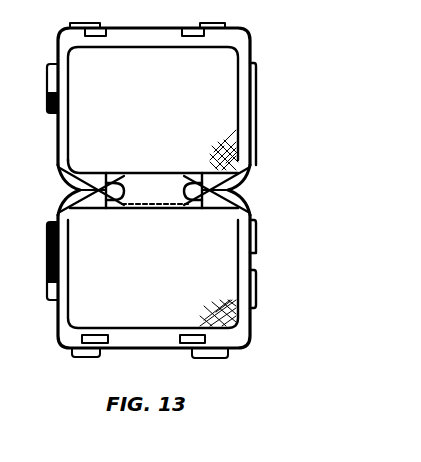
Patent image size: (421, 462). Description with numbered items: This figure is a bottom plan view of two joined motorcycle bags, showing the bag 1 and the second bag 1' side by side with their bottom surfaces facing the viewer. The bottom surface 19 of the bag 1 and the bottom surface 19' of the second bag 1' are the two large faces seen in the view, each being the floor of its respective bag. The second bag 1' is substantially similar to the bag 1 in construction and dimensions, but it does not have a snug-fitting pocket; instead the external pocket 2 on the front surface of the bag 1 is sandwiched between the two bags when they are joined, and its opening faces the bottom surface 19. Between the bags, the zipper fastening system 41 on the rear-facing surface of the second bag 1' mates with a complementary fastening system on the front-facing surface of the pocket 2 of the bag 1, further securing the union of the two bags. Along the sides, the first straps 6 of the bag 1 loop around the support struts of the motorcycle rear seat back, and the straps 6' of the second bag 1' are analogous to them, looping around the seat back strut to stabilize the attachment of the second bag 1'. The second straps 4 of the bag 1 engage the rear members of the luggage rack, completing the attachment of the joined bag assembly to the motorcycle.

The bag 1 is at (170, 82).
The second bag 1' is at (206, 298).
The external pocket 2 is at (152, 192).
The second straps 4 is at (191, 28).
The first straps 6 is at (180, 188).
The straps 6' is at (195, 203).
The bottom surface 19 is at (197, 108).
The bottom surface 19' is at (197, 274).
The zipper fastening system 41 is at (150, 200).